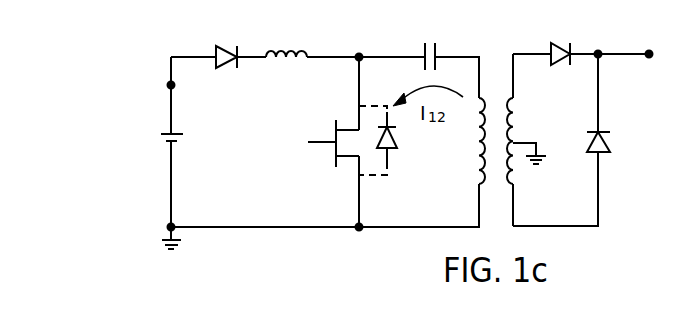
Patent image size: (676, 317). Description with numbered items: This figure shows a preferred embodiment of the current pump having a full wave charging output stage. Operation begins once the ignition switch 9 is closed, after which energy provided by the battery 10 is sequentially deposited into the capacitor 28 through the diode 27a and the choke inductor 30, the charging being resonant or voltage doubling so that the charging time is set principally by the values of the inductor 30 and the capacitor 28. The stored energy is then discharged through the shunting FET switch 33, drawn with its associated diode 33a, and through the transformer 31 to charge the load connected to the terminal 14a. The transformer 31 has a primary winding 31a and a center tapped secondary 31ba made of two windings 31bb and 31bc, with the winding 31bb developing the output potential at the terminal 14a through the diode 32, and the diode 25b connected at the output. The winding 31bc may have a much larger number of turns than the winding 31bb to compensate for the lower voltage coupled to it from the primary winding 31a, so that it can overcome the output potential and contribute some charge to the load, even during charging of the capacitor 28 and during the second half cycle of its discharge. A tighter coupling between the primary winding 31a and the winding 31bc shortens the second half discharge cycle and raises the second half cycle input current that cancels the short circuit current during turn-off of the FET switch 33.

The ignition switch 9 is at (160, 96).
The battery 10 is at (161, 140).
The diode 27a is at (226, 45).
The choke inductor 30 is at (286, 42).
The capacitor 28 is at (429, 44).
The FET switch 33 is at (331, 139).
The diode (intrinsic body diode) 33a is at (396, 140).
The transformer 31 is at (521, 140).
The primary winding 31a is at (466, 141).
The winding 31bb is at (538, 98).
The center tapped secondary 31ba is at (554, 153).
The winding 31bc is at (513, 169).
The diode 32 is at (560, 41).
The output terminal 14a is at (656, 42).
The diode 25b is at (617, 143).